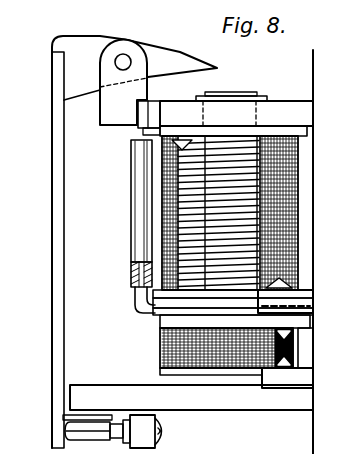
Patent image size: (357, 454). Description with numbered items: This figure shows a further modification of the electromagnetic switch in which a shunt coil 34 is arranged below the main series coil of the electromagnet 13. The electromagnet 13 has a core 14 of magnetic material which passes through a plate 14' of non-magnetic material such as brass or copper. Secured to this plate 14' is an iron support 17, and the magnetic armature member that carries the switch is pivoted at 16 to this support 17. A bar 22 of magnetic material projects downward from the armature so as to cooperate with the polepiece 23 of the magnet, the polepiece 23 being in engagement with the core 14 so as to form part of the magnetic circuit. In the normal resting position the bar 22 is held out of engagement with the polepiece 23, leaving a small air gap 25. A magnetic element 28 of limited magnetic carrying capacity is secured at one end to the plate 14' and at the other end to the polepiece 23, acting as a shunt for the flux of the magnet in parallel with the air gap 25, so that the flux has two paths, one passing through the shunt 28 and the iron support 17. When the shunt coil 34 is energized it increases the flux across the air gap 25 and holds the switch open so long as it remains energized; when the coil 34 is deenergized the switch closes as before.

The electromagnet 13 is at (298, 228).
The core 14 is at (236, 88).
The plate of non-magnetic material 14' is at (236, 118).
The pivot 16 is at (115, 62).
The iron support 17 is at (123, 83).
The bar of magnetic material 22 is at (52, 176).
The polepiece 23 is at (228, 410).
The air gap 25 is at (70, 388).
The magnetic element 28 is at (137, 136).
The shunt coil 34 is at (166, 353).